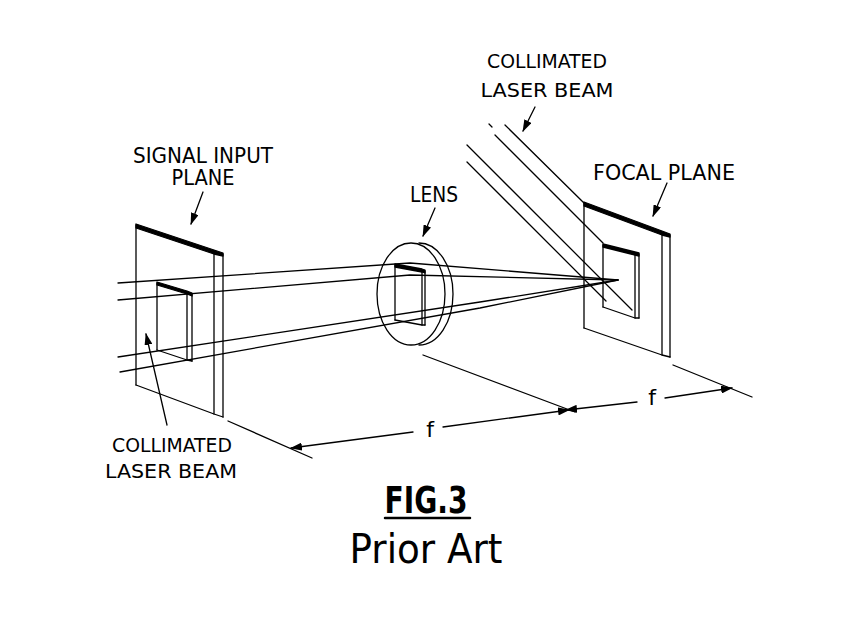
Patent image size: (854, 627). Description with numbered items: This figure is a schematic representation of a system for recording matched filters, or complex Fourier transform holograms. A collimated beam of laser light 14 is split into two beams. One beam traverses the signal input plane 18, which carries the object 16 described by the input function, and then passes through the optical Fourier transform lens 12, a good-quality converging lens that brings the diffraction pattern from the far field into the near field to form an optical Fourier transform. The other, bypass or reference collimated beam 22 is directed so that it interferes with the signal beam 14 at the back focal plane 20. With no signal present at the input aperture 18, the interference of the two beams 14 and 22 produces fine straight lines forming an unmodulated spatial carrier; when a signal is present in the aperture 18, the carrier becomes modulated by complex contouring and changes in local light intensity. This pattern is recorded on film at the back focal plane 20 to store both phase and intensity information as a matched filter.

The optical Fourier transform lens 12 is at (398, 247).
The collimated beam of laser light 14 is at (118, 284).
The object 16 is at (157, 330).
The signal input plane 18 is at (136, 236).
The back focal plane 20 is at (672, 246).
The reference collimated beam 22 is at (540, 154).